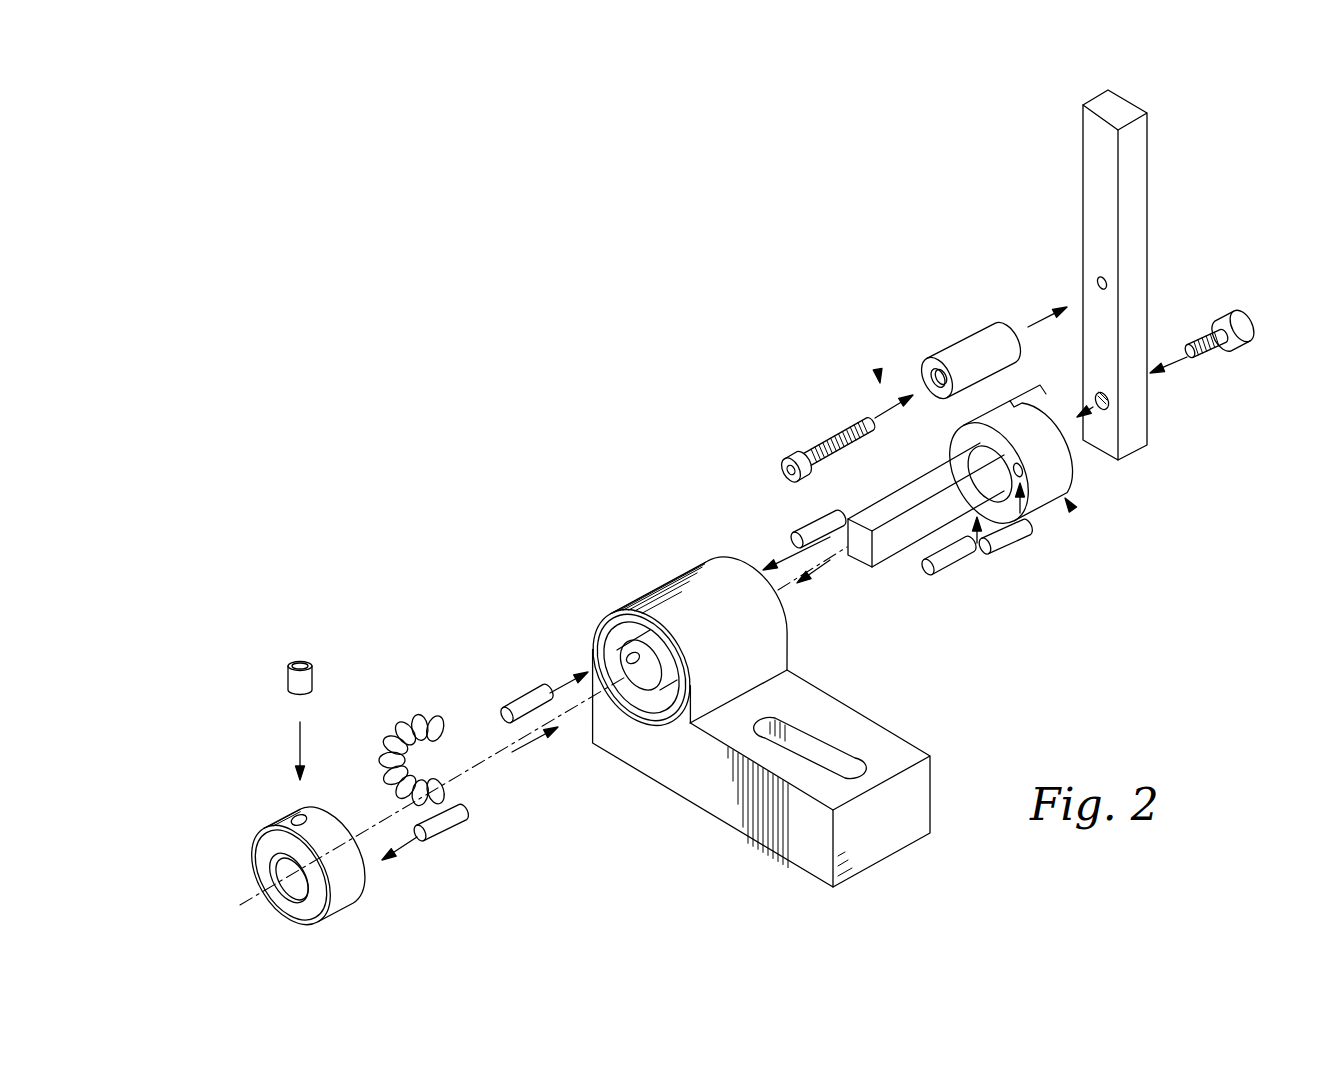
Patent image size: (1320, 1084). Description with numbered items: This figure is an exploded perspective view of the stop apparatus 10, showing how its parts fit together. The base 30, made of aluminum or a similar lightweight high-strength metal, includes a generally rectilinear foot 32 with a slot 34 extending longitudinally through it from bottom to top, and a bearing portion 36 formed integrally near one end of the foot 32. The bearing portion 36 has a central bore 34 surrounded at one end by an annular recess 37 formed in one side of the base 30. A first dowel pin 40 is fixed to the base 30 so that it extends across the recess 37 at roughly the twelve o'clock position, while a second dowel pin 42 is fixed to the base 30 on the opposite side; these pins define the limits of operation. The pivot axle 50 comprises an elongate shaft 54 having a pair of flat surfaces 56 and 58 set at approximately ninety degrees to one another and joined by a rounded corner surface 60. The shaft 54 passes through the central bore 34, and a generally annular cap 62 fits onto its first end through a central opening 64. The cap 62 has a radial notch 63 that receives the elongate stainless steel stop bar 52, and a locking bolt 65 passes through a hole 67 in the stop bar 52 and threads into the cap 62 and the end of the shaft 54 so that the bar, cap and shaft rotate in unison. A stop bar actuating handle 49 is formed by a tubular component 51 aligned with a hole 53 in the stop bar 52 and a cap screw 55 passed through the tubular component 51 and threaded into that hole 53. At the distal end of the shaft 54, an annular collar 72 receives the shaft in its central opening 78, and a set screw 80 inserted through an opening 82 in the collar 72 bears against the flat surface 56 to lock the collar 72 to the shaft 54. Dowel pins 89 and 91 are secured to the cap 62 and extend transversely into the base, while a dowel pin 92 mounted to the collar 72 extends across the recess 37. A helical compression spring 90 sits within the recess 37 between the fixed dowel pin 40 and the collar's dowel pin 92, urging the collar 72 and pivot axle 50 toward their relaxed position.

The stop apparatus 10 is at (337, 638).
The base 30 is at (652, 583).
The foot 32 is at (787, 810).
The slot / central bore 34 is at (627, 660).
The bearing portion 36 is at (690, 587).
The annular recess 37 is at (610, 652).
The first dowel pin 40 is at (521, 695).
The second dowel pin 42 is at (810, 523).
The stop bar actuating handle 49 is at (877, 370).
The pivot axle 50 is at (1072, 510).
The tubular component 51 is at (965, 337).
The stop bar 52 is at (1080, 177).
The hole 53 is at (1097, 283).
The shaft 54 is at (910, 480).
The cap screw 55 is at (817, 447).
The flat surface 56 is at (883, 512).
The flat surface 58 is at (900, 534).
The rounded corner surface 60 is at (853, 560).
The cap 62 is at (1082, 462).
The radial notch 63 is at (1053, 410).
The central opening 64 is at (1003, 427).
The locking bolt 65 is at (1205, 328).
The hole 67 is at (1118, 393).
The annular collar 72 is at (347, 886).
The central opening 78 is at (288, 924).
The set screw 80 is at (313, 678).
The opening 82 is at (298, 818).
The dowel pin 89 is at (1020, 547).
The helical compression spring 90 is at (429, 710).
The dowel pin 91 is at (960, 560).
The dowel pin 92 is at (453, 835).